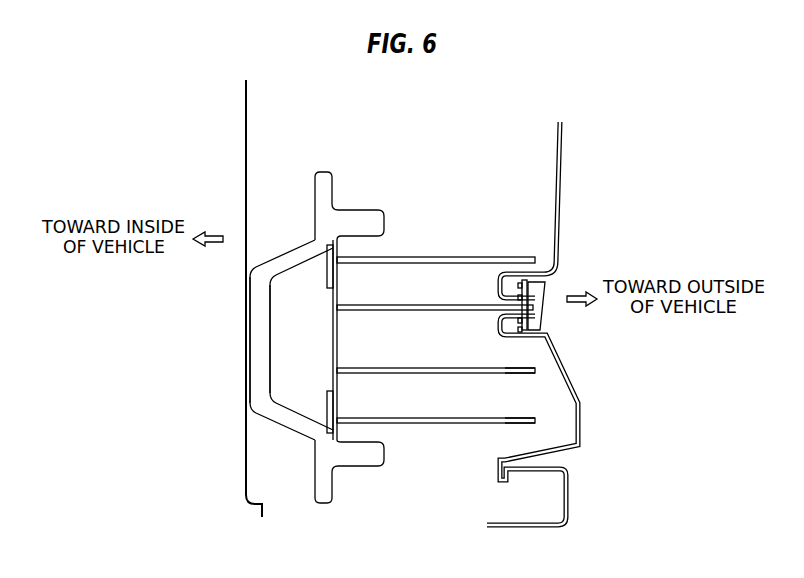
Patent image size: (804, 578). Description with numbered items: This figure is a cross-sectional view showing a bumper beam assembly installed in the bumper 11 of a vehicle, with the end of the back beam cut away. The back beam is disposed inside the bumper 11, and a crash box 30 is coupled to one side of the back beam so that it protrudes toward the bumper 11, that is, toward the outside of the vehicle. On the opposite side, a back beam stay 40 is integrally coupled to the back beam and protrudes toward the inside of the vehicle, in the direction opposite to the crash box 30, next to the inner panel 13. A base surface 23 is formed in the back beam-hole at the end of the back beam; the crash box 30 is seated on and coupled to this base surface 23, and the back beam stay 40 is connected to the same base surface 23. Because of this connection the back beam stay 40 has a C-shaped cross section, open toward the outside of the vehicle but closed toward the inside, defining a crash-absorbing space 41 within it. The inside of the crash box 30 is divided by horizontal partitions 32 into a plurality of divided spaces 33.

The bumper 11 is at (560, 186).
The inner panel 13 is at (246, 180).
The base surface 23 is at (327, 265).
The crash box 30 is at (431, 246).
The horizontal partition 32 is at (510, 412).
The divided space 33 is at (433, 346).
The back beam stay 40 is at (275, 355).
The crash-absorbing space 41 is at (289, 339).